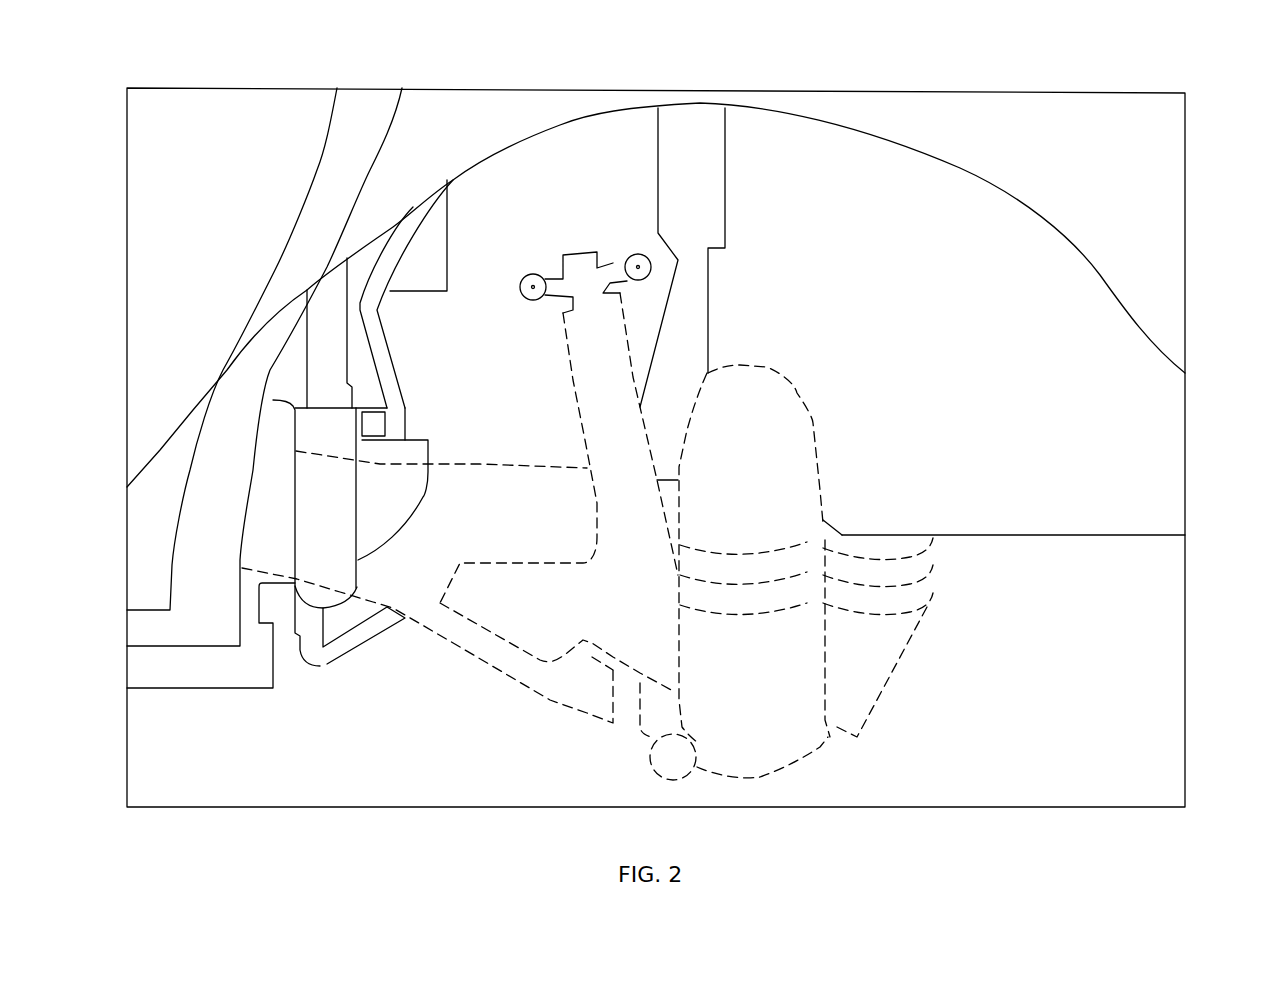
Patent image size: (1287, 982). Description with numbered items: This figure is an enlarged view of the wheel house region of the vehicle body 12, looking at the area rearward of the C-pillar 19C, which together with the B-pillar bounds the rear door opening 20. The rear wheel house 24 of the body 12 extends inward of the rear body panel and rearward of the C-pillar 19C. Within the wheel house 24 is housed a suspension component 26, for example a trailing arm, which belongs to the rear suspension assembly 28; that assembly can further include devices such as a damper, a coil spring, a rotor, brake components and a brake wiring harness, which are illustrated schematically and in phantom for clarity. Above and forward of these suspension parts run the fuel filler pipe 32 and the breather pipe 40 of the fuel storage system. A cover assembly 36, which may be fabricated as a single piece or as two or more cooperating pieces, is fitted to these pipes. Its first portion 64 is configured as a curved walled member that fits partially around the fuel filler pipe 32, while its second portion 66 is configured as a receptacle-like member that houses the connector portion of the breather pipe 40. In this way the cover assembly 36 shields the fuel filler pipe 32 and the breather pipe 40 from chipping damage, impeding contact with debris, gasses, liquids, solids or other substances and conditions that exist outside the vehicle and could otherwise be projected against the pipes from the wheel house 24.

The body 12 is at (1128, 173).
The C-pillar 19C is at (353, 140).
The rear door opening 20 is at (150, 193).
The rear wheel house 24 is at (1103, 413).
The suspension component 26 is at (555, 677).
The rear suspension assembly 28 is at (958, 663).
The fuel filler pipe 32 is at (317, 347).
The cover assembly 36 is at (342, 553).
The breather pipe 40 is at (390, 350).
The first portion 64 is at (317, 520).
The second portion 66 is at (410, 455).